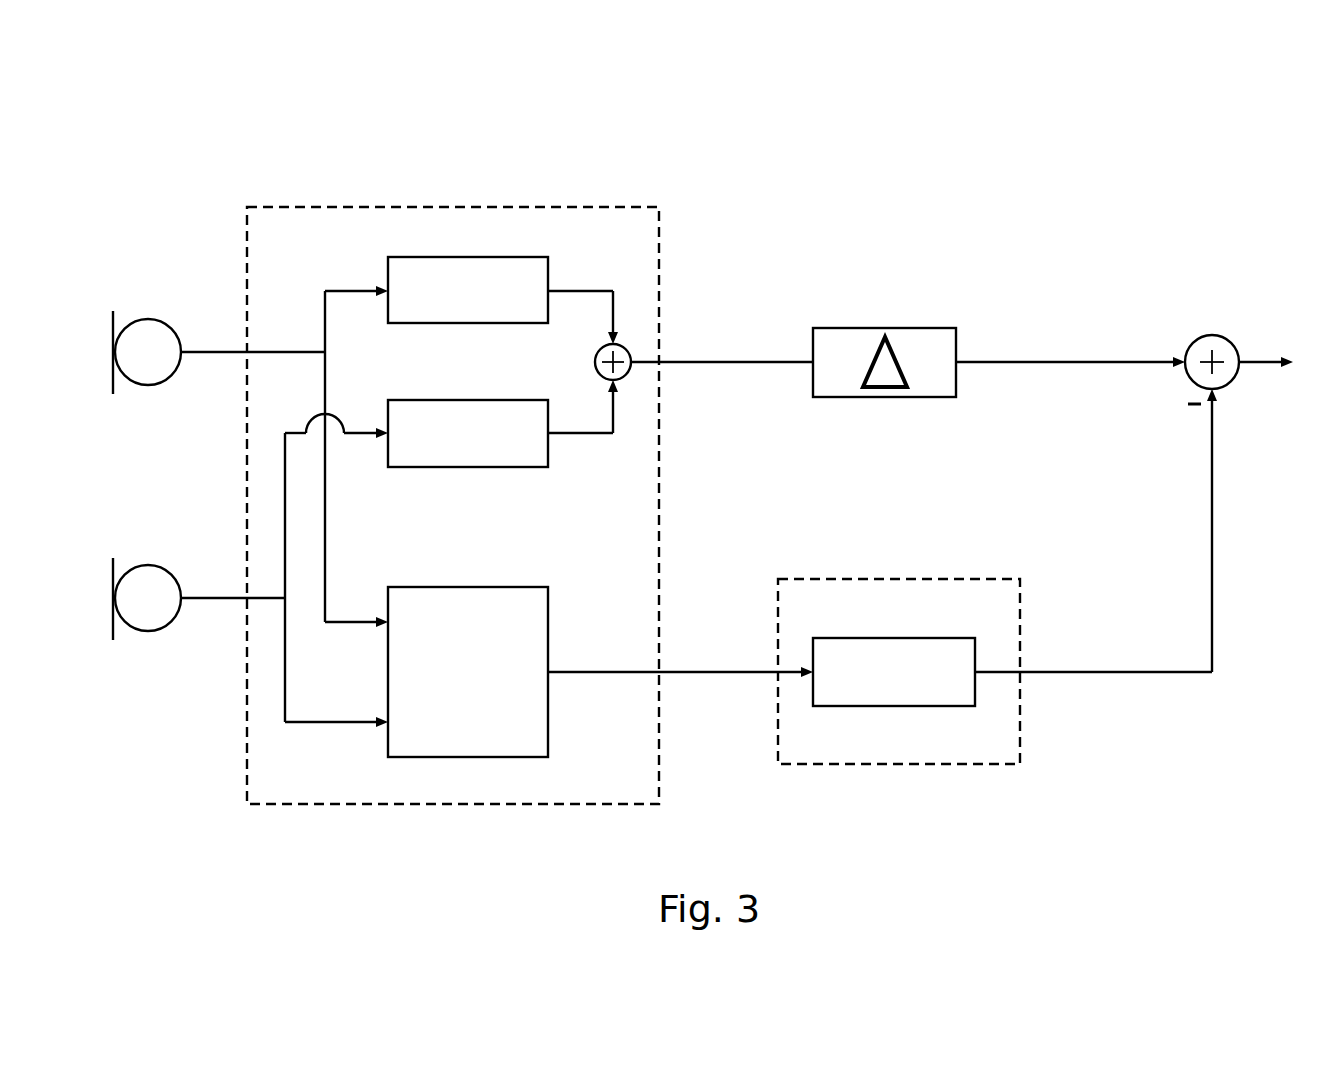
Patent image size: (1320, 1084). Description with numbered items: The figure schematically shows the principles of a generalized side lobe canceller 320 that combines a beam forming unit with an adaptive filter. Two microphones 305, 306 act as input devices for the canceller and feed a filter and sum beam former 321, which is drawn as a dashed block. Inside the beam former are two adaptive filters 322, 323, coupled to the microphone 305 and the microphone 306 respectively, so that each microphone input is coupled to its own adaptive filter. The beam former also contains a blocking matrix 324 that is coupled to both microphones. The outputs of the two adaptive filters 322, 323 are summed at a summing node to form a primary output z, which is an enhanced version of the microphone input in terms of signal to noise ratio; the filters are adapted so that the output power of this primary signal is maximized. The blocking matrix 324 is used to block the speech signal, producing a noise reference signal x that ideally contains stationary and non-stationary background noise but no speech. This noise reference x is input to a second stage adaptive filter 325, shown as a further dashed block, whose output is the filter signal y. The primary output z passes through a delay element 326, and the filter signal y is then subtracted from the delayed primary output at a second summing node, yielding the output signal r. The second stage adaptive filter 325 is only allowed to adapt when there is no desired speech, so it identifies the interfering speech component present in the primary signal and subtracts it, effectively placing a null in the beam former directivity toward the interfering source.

The generalized side lobe canceller 320 is at (962, 134).
The filter and sum beam former 321 is at (660, 228).
The adaptive filter 322 is at (465, 257).
The adaptive filter 323 is at (548, 467).
The blocking matrix 324 is at (468, 587).
The second stage adaptive filter 325 is at (975, 764).
The delay element 326 is at (934, 328).
The microphone 305 is at (172, 322).
The microphone 306 is at (172, 566).